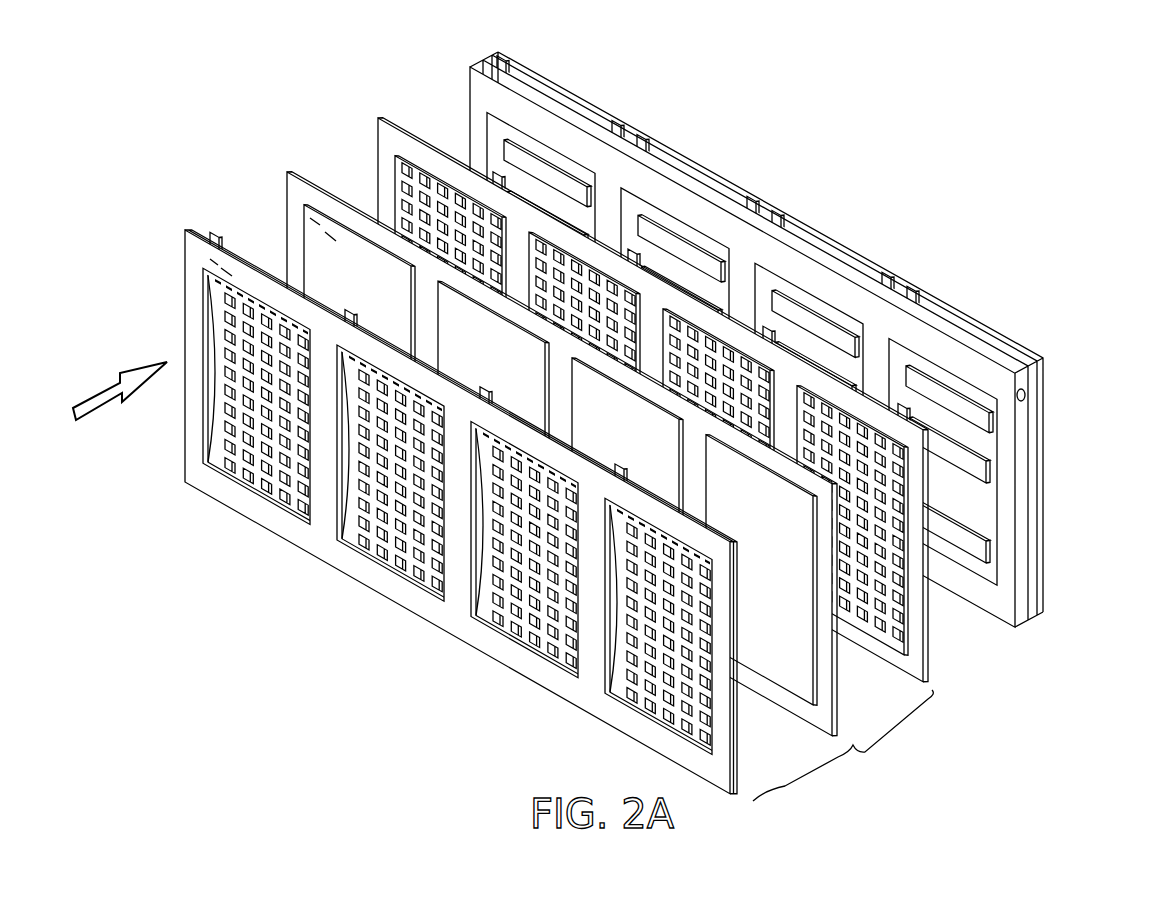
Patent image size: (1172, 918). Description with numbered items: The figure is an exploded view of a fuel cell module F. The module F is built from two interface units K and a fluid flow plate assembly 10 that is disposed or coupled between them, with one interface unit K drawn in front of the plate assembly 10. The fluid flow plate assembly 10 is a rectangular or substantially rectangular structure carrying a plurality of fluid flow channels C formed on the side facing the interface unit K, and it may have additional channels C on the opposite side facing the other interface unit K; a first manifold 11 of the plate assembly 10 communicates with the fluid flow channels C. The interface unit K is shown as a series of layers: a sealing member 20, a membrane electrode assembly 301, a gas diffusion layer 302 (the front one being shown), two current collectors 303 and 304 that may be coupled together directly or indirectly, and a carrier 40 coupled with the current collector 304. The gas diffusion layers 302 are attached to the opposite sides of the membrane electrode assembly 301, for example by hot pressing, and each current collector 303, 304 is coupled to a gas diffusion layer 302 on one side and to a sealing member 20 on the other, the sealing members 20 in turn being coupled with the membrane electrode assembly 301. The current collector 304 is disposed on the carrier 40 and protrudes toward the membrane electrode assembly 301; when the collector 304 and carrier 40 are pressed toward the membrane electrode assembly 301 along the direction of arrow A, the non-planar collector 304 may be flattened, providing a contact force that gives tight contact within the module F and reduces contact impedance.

The fluid flow plate assembly 10 is at (811, 343).
The first manifold 11 is at (1026, 395).
The sealing member 20 is at (522, 437).
The carrier 40 is at (426, 507).
The membrane electrode assembly 301 is at (517, 427).
The gas diffusion layer 302 is at (320, 263).
The current collector 303 is at (378, 190).
The current collector 304 is at (405, 575).
The fluid flow channel C is at (667, 217).
The interface unit K is at (1032, 298).
The fuel cell module F is at (1034, 111).
The arrow A is at (120, 391).